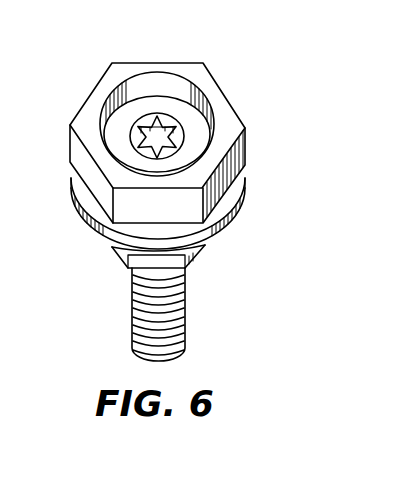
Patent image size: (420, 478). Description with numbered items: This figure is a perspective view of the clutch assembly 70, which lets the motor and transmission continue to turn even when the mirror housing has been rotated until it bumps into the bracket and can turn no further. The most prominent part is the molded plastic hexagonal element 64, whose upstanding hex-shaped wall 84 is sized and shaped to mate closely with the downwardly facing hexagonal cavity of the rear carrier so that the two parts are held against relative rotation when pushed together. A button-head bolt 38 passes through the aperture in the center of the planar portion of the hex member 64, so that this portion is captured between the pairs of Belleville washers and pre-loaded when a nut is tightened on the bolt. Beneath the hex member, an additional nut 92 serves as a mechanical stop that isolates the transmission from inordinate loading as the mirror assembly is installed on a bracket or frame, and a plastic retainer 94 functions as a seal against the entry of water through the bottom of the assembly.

The clutch assembly 70 is at (162, 189).
The hexagonal element 64 is at (84, 90).
The upstanding hex-shaped wall 84 is at (229, 98).
The plastic retainer 94 is at (223, 208).
The additional nut 92 is at (113, 248).
The button-head bolt 38 is at (185, 314).